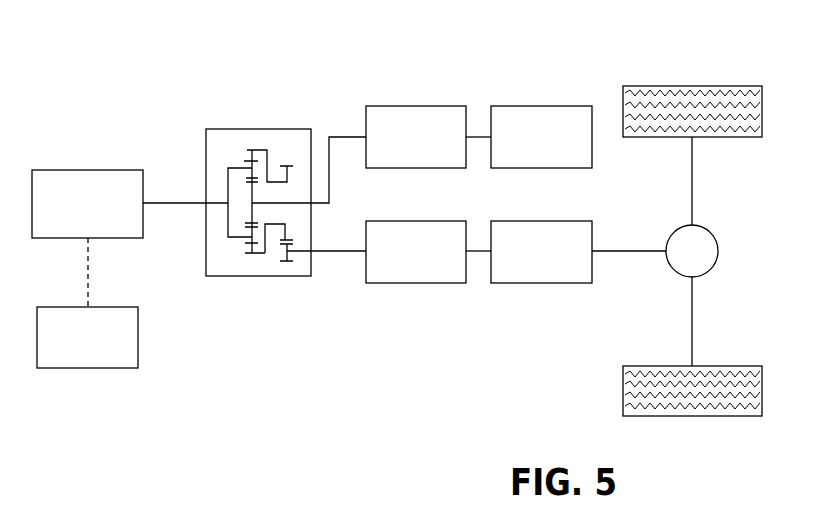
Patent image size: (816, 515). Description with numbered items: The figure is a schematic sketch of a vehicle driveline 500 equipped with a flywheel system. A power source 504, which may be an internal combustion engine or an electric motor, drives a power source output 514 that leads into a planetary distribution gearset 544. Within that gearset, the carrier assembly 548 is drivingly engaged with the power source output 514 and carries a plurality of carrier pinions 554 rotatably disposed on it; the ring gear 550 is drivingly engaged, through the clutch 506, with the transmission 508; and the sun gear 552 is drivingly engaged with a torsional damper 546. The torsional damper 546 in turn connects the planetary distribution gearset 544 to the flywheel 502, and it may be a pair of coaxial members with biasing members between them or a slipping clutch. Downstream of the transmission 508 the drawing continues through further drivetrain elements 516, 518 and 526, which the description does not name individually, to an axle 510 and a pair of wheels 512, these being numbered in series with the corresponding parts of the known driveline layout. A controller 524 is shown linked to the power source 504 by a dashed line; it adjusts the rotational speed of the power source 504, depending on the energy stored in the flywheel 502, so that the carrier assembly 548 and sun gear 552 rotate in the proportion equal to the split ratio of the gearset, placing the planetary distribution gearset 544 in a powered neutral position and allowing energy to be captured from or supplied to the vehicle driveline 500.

The vehicle driveline 500 is at (97, 58).
The flywheel 502 is at (542, 106).
The power source 504 is at (88, 170).
The clutch 506 is at (416, 283).
The transmission 508 is at (542, 283).
The axle 510 is at (692, 328).
The wheels 512 is at (691, 86).
The power source output 514 is at (175, 203).
The transmission output shaft 516 is at (476, 249).
The differential output shaft 518 is at (612, 250).
The controller 524 is at (88, 368).
The final drive 526 is at (637, 250).
The planetary distribution gearset 544 is at (258, 112).
The torsional damper 546 is at (415, 106).
The carrier assembly 548 is at (224, 232).
The ring gear 550 is at (250, 253).
The sun gear 552 is at (290, 203).
The carrier pinions 554 is at (247, 161).